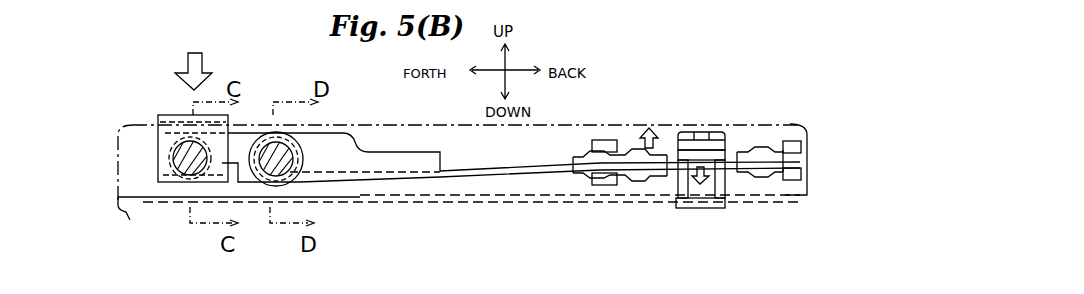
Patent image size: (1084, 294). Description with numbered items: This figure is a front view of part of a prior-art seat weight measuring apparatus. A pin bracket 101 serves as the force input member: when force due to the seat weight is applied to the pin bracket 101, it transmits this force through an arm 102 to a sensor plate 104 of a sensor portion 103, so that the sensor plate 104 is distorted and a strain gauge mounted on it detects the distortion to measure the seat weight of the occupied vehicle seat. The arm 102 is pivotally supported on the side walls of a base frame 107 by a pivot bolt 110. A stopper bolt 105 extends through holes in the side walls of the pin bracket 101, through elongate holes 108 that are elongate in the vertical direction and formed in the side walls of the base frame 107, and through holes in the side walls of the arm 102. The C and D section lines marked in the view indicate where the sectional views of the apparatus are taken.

The pin bracket 101 is at (173, 114).
The arm 102 is at (410, 177).
The sensor portion 103 is at (710, 118).
The sensor plate 104 is at (678, 158).
The stopper bolt 105 is at (175, 180).
The base frame 107 is at (128, 228).
The elongate holes 108 is at (194, 170).
The pivot bolt 110 is at (293, 162).